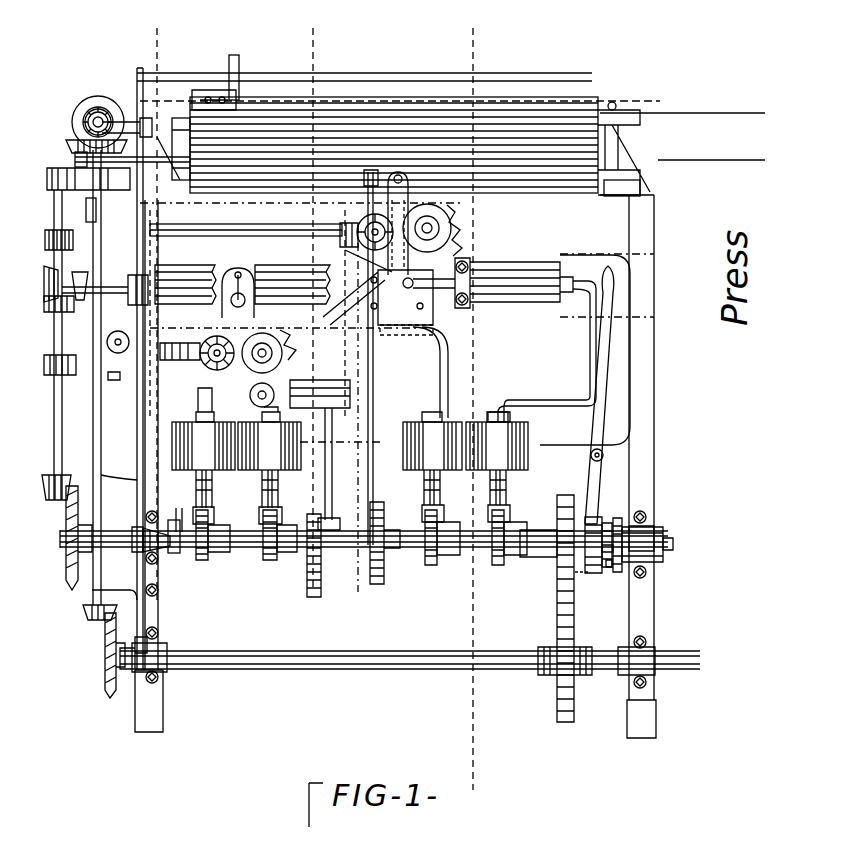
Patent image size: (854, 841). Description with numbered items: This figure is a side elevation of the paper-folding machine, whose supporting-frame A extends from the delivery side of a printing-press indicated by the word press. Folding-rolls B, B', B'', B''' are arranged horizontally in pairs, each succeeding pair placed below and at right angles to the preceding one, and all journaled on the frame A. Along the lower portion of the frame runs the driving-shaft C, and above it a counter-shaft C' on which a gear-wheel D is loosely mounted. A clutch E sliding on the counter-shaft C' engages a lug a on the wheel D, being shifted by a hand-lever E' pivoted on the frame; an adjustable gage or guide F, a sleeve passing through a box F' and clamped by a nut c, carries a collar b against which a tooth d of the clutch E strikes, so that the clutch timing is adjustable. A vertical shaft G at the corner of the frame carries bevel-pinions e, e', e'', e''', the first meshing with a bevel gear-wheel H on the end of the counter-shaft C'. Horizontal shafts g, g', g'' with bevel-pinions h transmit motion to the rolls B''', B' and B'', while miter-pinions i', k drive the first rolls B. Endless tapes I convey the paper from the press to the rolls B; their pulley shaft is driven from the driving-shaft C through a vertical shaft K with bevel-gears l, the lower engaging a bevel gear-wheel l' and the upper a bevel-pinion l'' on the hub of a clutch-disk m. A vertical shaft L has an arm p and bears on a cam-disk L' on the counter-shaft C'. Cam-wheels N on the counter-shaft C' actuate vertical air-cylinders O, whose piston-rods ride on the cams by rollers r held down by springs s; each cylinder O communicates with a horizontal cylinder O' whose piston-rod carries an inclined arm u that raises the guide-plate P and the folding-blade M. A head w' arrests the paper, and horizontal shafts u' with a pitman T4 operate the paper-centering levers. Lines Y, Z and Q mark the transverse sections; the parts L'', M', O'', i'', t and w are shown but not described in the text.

The supporting-frame A is at (365, 403).
The folding-rolls B is at (400, 146).
The folding-rolls B' is at (400, 230).
The folding-rolls B'' is at (242, 291).
The folding-rolls B''' is at (271, 368).
The driving-shaft C is at (410, 653).
The counter-shaft C' is at (364, 551).
The gear-wheel D is at (552, 609).
The clutch E is at (593, 555).
The hand-lever E' is at (598, 395).
The adjustable gage or guide F is at (610, 571).
The box F' is at (642, 544).
The vertical shaft G is at (54, 406).
The bevel gear-wheel H is at (66, 541).
The endless tapes I is at (682, 126).
The vertical shaft K is at (104, 377).
The vertical shaft L is at (116, 537).
The cam-disk L' is at (174, 543).
The valve bracket L'' is at (320, 455).
The folding-blade M is at (246, 167).
The arm M' is at (398, 223).
The cam-wheels N is at (502, 560).
The vertical air-cylinder O is at (317, 400).
The secondary cylinder O' is at (525, 340).
The collar O'' is at (185, 546).
The guide-plate P is at (385, 334).
The section line Q is at (301, 317).
The pitman T4 is at (372, 420).
The section line Y is at (256, 318).
The section line Z is at (466, 409).
The lug a is at (578, 575).
The collar b is at (616, 518).
The nut c is at (666, 537).
The tooth d is at (605, 567).
The bevel-pinion e is at (45, 487).
The bevel-pinion e' is at (49, 365).
The bevel-pinion e'' is at (48, 303).
The bevel-pinion e''' is at (47, 240).
The horizontal shaft g is at (128, 381).
The horizontal shaft g' is at (105, 280).
The horizontal shaft g'' is at (40, 284).
The bevel-pinion h is at (146, 301).
The miter-pinions i' is at (80, 278).
The bevel gear i'' is at (83, 174).
The miter-pinions k is at (76, 156).
The bevel-gears l is at (86, 375).
The bevel gear-wheel l' is at (104, 655).
The bevel-pinion l'' is at (80, 120).
The clutch-disk m is at (112, 115).
The arm p is at (160, 530).
The roller r is at (351, 520).
The spring s is at (339, 489).
The valve stems t is at (345, 425).
The inclined arm u is at (421, 286).
The horizontal shafts u' is at (604, 158).
The worm gear w is at (326, 555).
The head w' is at (235, 68).